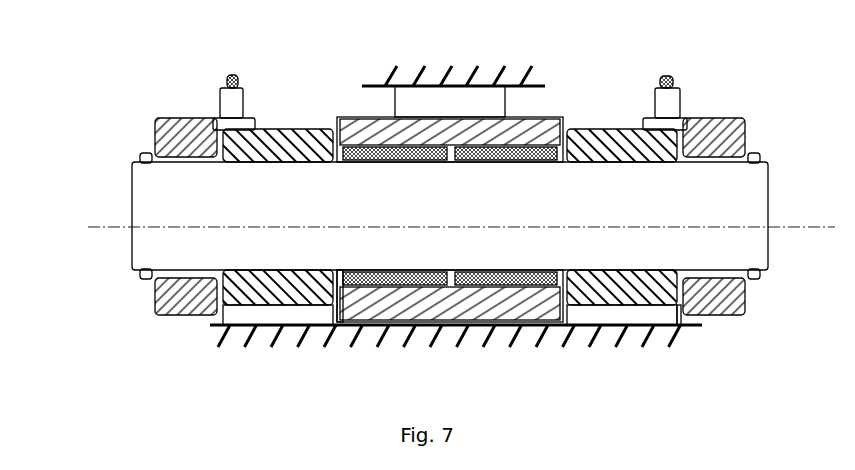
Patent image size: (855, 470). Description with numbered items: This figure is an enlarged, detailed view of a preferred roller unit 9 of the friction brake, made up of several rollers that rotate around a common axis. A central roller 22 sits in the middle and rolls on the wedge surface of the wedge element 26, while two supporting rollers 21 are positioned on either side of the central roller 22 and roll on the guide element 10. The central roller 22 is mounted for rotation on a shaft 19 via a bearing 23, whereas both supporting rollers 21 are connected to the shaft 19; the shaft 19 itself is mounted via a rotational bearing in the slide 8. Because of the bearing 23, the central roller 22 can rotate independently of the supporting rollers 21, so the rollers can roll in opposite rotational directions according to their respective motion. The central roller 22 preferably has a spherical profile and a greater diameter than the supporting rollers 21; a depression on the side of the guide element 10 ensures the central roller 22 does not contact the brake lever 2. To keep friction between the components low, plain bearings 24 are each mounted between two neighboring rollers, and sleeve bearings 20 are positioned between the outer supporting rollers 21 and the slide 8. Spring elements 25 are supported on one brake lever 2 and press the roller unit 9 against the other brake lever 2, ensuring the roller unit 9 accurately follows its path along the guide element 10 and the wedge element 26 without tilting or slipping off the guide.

The brake lever 2 is at (510, 72).
The slide 8 is at (182, 118).
The roller unit 9 is at (102, 118).
The guide element 10 is at (268, 312).
The shaft 19 is at (140, 238).
The sleeve bearing 20 is at (678, 312).
The supporting roller 21 is at (280, 128).
The central roller 22 is at (380, 125).
The bearing 23 is at (477, 292).
The plain bearing 24 is at (339, 292).
The spring element 25 is at (232, 105).
The wedge element 26 is at (458, 100).